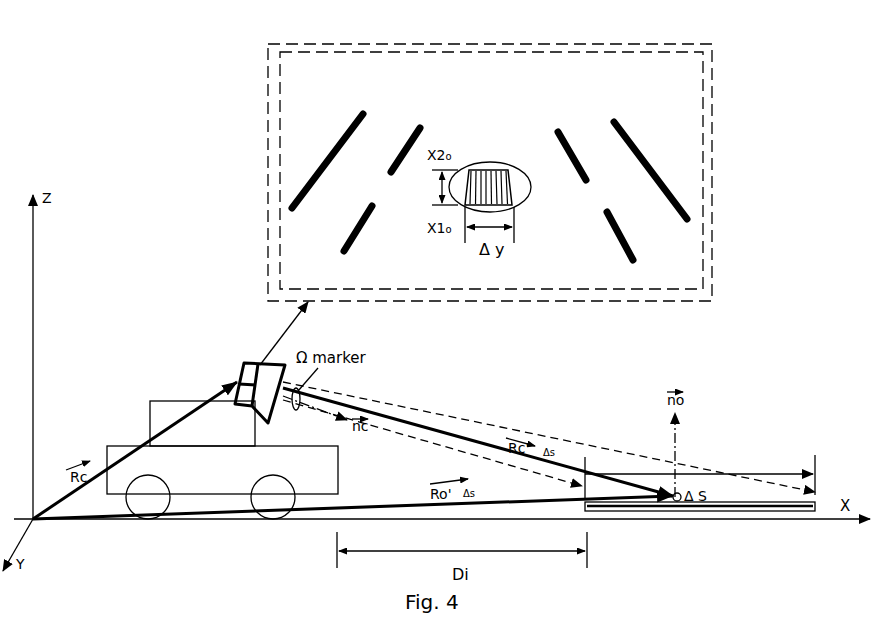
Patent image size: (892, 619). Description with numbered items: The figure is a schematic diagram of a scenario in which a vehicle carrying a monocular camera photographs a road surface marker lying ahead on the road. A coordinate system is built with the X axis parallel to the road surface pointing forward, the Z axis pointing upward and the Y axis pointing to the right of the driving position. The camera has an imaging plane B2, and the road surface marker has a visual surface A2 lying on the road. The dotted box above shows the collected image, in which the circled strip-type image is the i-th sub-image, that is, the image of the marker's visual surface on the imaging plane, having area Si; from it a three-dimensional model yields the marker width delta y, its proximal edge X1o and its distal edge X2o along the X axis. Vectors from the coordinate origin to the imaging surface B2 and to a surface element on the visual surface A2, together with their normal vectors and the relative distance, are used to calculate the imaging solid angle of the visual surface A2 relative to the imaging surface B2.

The imaging plane of the monocular camera B2 is at (260, 383).
The visual surface of the road surface marker A2 is at (700, 499).
The area of the i-th sub-image Si is at (515, 208).
The proximal edge of the road surface marker X1o is at (587, 464).
The distal edge of the road surface marker X2o is at (814, 465).